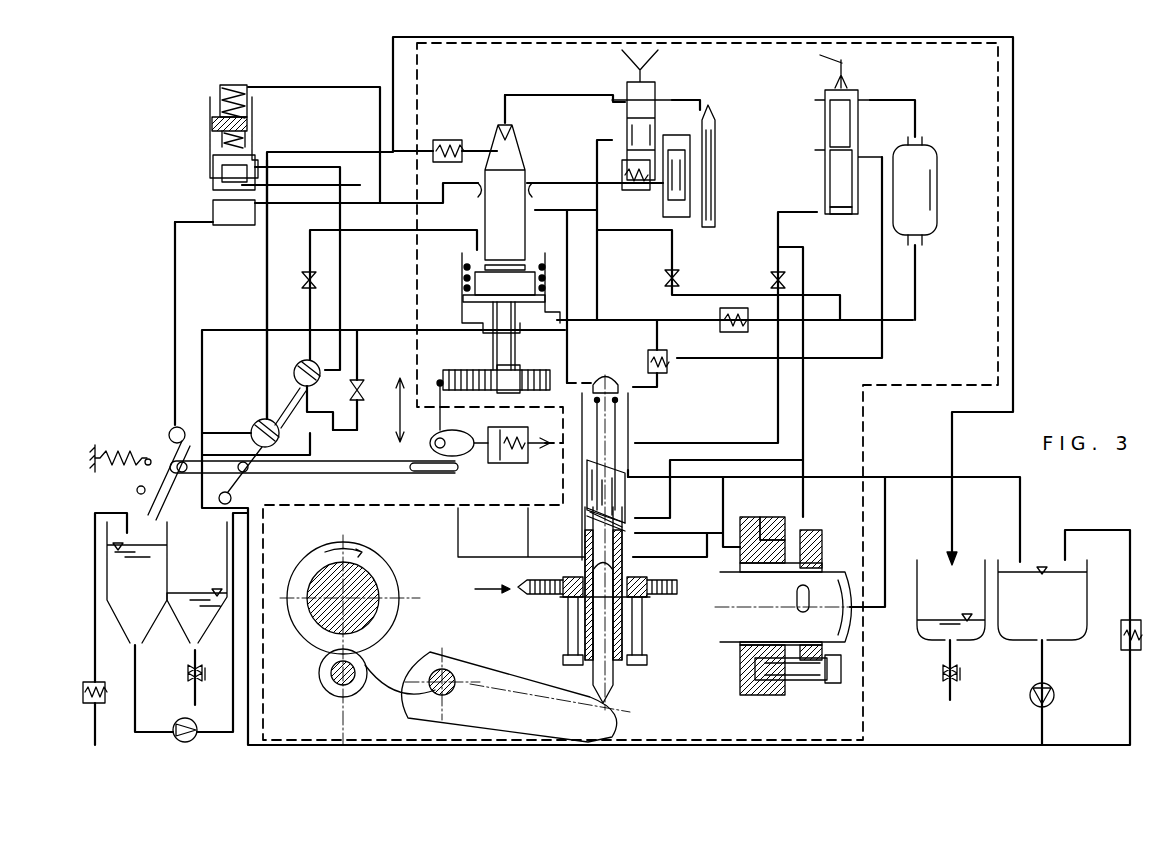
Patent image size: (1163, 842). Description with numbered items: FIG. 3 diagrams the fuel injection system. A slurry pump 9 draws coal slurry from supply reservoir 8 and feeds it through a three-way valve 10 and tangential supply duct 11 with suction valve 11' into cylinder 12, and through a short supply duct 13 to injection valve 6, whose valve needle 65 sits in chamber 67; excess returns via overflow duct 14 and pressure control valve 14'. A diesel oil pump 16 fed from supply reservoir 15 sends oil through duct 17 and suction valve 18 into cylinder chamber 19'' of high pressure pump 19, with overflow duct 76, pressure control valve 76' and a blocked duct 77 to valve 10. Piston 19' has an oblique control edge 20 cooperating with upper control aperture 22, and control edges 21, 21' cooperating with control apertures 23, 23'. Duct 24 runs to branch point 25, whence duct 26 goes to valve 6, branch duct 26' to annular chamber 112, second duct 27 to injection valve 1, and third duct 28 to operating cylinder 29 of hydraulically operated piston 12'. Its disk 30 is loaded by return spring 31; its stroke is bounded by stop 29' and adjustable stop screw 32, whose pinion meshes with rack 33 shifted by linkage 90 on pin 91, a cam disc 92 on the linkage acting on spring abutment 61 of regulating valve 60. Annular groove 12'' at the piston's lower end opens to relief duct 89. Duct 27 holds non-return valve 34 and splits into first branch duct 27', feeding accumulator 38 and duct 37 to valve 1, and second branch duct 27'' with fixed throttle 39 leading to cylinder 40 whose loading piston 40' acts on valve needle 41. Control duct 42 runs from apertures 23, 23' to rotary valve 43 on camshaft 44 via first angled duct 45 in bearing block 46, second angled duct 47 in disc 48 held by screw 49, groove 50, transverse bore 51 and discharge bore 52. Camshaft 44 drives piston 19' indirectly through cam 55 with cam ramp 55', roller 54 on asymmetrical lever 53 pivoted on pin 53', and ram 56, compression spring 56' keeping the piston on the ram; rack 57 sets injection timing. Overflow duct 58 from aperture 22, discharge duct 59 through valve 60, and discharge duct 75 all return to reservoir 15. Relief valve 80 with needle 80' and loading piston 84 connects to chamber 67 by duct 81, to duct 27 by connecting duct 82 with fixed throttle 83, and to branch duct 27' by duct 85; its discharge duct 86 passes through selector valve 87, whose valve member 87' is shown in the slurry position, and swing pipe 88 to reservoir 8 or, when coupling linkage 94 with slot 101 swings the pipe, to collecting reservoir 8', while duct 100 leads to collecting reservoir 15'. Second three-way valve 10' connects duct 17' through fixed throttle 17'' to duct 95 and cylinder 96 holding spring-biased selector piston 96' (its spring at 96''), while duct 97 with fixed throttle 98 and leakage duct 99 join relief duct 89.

The injection valve 1 is at (850, 80).
The injection valve 6 is at (628, 84).
The supply reservoir 8 is at (135, 586).
The collecting reservoir 8' is at (197, 613).
The slurry pump 9 is at (178, 722).
The three-way valve 10 is at (262, 432).
The second three-way valve 10' is at (304, 385).
The supply duct 11 is at (246, 289).
The suction valve 11' is at (445, 130).
The cylinder 12 is at (519, 182).
The hydraulically operated piston 12' is at (507, 194).
The annular groove 12'' is at (508, 246).
The supply duct 13 is at (522, 96).
The overflow duct 14 is at (92, 629).
The pressure control valve 14' is at (108, 713).
The supply reservoir 15 is at (1064, 652).
The collecting reservoir 15' is at (930, 630).
The diesel oil pump 16 is at (1055, 696).
The duct 17 is at (665, 515).
The duct 17' is at (336, 441).
The fixed throttle 17'' is at (357, 386).
The suction valve 18 is at (668, 356).
The high pressure pump 19 is at (644, 542).
The piston 19' is at (581, 583).
The cylinder chamber 19'' is at (615, 374).
The oblique control edge 20 is at (610, 470).
The upper control edge 21 is at (624, 509).
The lower control edge 21' is at (561, 517).
The upper control aperture 22 is at (635, 472).
The central control aperture 23 is at (679, 505).
The lower control aperture 23' is at (670, 545).
The duct 24 is at (565, 382).
The branch point 25 is at (568, 320).
The duct 26 is at (603, 265).
The branch duct 26' is at (566, 195).
The second duct 27 is at (735, 306).
The first branch duct 27' is at (830, 334).
The second branch duct 27'' is at (726, 327).
The third duct 28 is at (568, 315).
The operating cylinder 29 is at (494, 306).
The stop 29' is at (455, 252).
The disk 30 is at (465, 305).
The return spring 31 is at (465, 288).
The adjustable stop screw 32 is at (517, 353).
The rack 33 is at (528, 392).
The non-return valve 34 is at (722, 332).
The duct 37 is at (918, 120).
The accumulator 38 is at (932, 212).
The fixed throttle 39 is at (770, 274).
The cylinder 40 is at (822, 153).
The loading piston 40' is at (851, 228).
The valve needle 41 is at (860, 95).
The control duct 42 is at (800, 282).
The rotary valve 43 is at (828, 530).
The camshaft 44 is at (325, 616).
The first angled duct 45 is at (748, 520).
The bearing block 46 is at (748, 695).
The second angled duct 47 is at (822, 556).
The disc 48 is at (795, 530).
The screw 49 is at (800, 685).
The groove 50 is at (795, 598).
The transverse bore 51 is at (803, 612).
The discharge bore 52 is at (720, 628).
The asymmetrical lever 53 is at (516, 695).
The pin 53' is at (387, 716).
The roller 54 is at (320, 690).
The cam 55 is at (373, 640).
The cam ramp 55' is at (400, 657).
The ram 56 is at (631, 633).
The compression spring 56' is at (660, 388).
The rack 57 is at (537, 600).
The overflow duct 58 is at (675, 470).
The discharge duct 59 is at (528, 512).
The regulating valve 60 is at (532, 462).
The spring abutment 61 is at (503, 463).
The valve needle 65 is at (660, 88).
The chamber 67 is at (625, 108).
The discharge duct 75 is at (597, 157).
The overflow duct 76 is at (1113, 719).
The pressure control valve 76' is at (1116, 647).
The duct 77 is at (212, 428).
The relief valve 80 is at (738, 165).
The needle 80' is at (746, 149).
The duct 81 is at (700, 90).
The connecting duct 82 is at (690, 185).
The fixed throttle 83 is at (668, 292).
The loading piston 84 is at (716, 200).
The duct 85 is at (680, 284).
The discharge duct 86 is at (320, 200).
The selector valve 87 is at (307, 204).
The valve piston 87' is at (209, 172).
The swing pipe 88 is at (165, 448).
The relief duct 89 is at (640, 232).
The linkage 90 is at (440, 435).
The pin 91 is at (452, 430).
The cam disc 92 is at (465, 460).
The coupling linkage 94 is at (325, 468).
The duct 95 is at (340, 280).
The cylinder 96 is at (213, 137).
The selector piston 96' is at (259, 119).
The spring 96'' is at (207, 101).
The duct 97 is at (310, 238).
The fixed throttle 98 is at (308, 290).
The leakage duct 99 is at (283, 86).
The duct 100 is at (360, 185).
The slot 101 is at (418, 500).
The annular chamber 112 is at (478, 205).